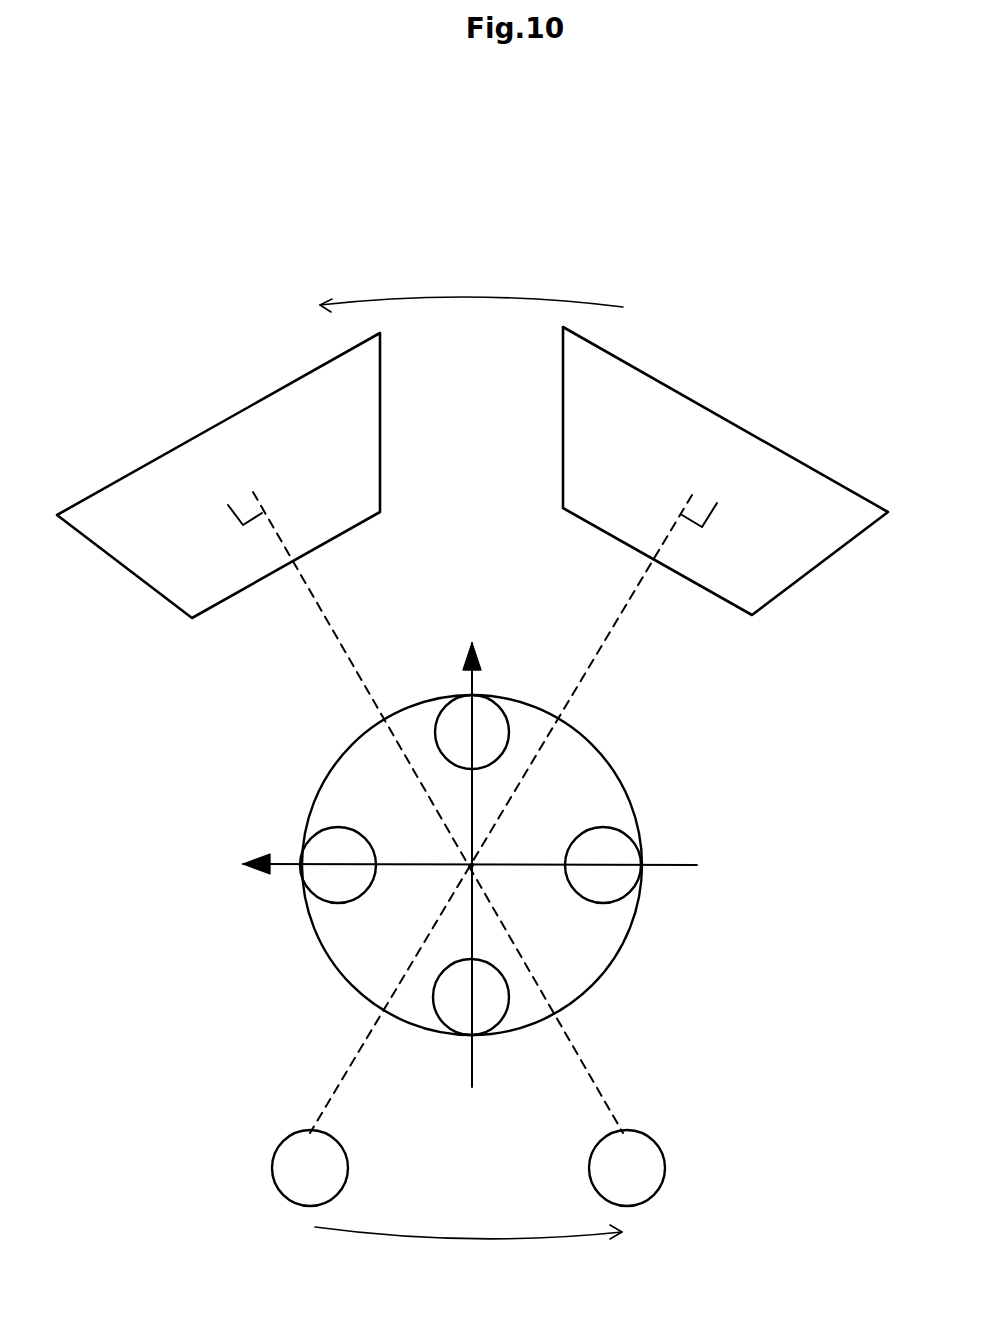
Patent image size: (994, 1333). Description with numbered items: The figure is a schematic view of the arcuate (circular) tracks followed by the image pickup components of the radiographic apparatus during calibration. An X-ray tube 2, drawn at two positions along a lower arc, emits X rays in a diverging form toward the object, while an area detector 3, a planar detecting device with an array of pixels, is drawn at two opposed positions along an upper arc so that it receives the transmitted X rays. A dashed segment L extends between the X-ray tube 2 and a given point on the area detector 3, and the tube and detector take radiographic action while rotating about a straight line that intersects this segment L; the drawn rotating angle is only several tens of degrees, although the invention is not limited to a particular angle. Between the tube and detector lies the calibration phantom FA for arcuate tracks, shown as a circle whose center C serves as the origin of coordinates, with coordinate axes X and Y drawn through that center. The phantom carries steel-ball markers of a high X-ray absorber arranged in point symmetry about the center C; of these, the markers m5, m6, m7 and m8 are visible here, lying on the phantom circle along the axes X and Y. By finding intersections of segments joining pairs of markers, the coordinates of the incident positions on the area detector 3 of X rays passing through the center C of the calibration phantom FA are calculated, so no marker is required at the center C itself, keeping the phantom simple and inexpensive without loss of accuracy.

The X-ray tube 2 is at (272, 1183).
The area detector 3 is at (168, 597).
The segment L is at (347, 650).
The calibration phantom FA is at (638, 783).
The center C is at (478, 880).
The X axis X is at (448, 874).
The Y axis Y is at (485, 865).
The marker m5 is at (432, 997).
The marker m6 is at (327, 828).
The marker m7 is at (627, 830).
The marker m8 is at (437, 712).